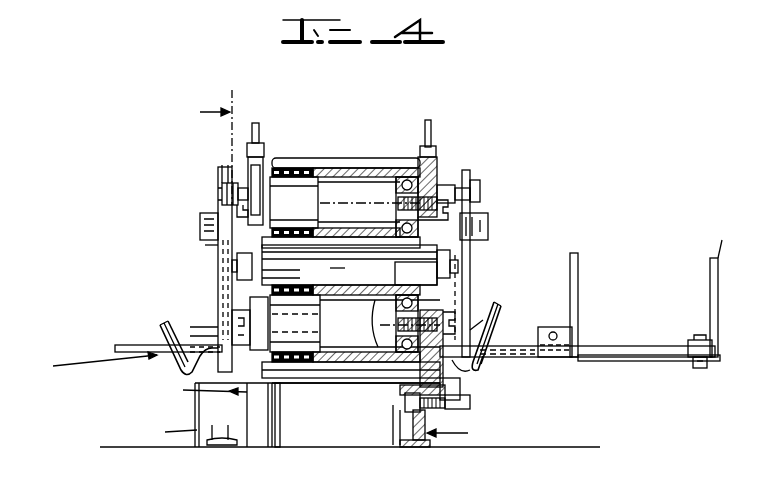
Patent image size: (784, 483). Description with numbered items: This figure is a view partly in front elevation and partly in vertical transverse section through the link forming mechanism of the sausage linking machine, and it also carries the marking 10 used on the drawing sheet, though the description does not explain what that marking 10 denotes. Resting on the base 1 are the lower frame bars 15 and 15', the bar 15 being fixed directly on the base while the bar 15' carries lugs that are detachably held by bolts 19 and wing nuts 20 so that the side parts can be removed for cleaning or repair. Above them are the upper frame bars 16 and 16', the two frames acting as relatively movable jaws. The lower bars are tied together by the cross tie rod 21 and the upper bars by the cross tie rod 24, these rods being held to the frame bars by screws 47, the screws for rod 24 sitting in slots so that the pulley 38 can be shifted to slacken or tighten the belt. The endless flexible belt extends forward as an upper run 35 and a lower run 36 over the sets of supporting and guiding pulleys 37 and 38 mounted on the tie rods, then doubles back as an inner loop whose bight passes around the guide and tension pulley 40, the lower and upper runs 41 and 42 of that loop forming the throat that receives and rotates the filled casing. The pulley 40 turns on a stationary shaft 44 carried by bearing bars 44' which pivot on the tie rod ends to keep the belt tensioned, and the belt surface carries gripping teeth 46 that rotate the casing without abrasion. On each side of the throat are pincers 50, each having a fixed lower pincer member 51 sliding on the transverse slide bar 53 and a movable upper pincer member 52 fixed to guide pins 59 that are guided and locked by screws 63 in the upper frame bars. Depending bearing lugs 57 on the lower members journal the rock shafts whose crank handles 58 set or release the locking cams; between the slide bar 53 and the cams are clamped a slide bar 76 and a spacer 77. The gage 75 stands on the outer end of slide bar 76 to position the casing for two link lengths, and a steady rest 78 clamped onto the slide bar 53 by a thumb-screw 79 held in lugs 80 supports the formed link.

The base 1 is at (313, 435).
The frame 10 is at (211, 256).
The lower frame bar 15 is at (199, 392).
The lower frame bar 15' is at (459, 355).
The upper frame bar 16 is at (211, 166).
The upper frame bar 16' is at (463, 167).
The bolt 19 is at (392, 408).
The wing nut 20 is at (470, 404).
The cross tie rod 21 is at (330, 313).
The cross tie rod 24 is at (333, 207).
The upper run of belt 35 is at (360, 166).
The lower run of belt 36 is at (358, 373).
The supporting and guiding pulley 37 is at (310, 362).
The supporting and guiding pulley 38 is at (298, 183).
The guide and tension pulley 40 is at (430, 253).
The lower run of inner loop 41 is at (327, 250).
The upper run of inner loop 42 is at (363, 252).
The stationary shaft 44 is at (465, 229).
The bearing bar 44' is at (348, 301).
The gripping teeth 46 is at (342, 162).
The screw 47 is at (440, 190).
The pincers 50 is at (490, 222).
The lower pincer member 51 is at (205, 244).
The upper pincer member 52 is at (224, 166).
The slide bar 53 is at (117, 346).
The bearing lug 57 is at (172, 371).
The crank handle 58 is at (160, 327).
The guide pin 59 is at (222, 189).
The guiding and locking screw 63 is at (258, 137).
The gage 75 is at (709, 287).
The slide bar 76 is at (662, 351).
The spacer 77 is at (85, 371).
The steady rest 78 is at (578, 277).
The thumb-screw 79 is at (558, 336).
The lug 80 is at (597, 357).